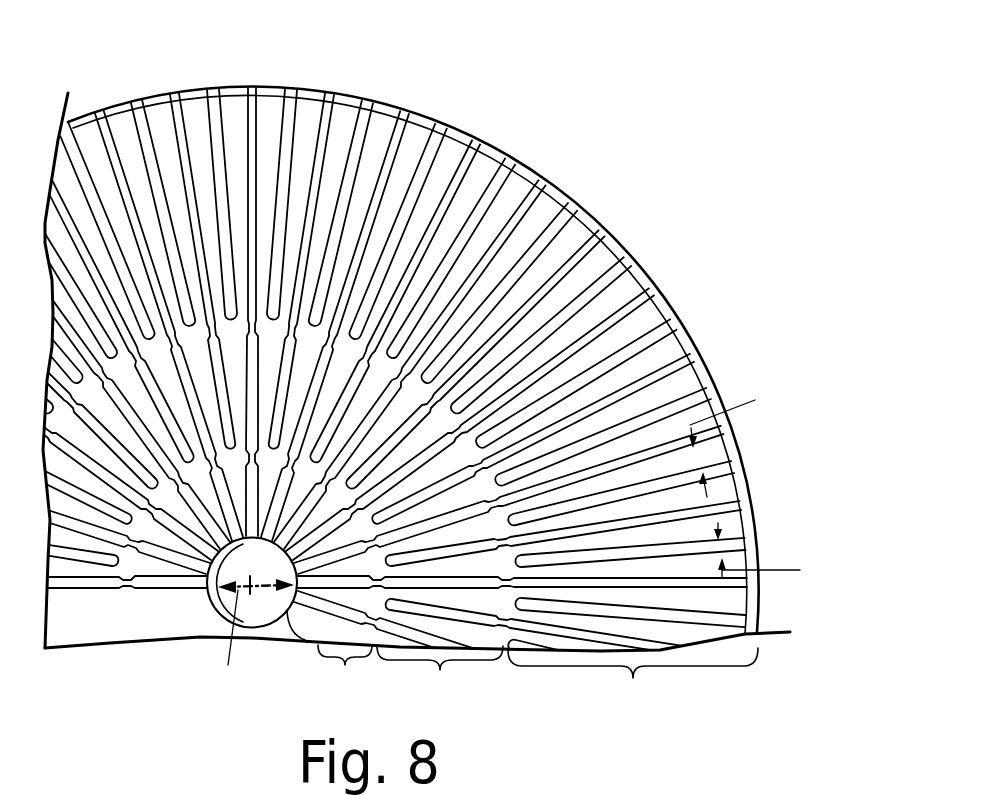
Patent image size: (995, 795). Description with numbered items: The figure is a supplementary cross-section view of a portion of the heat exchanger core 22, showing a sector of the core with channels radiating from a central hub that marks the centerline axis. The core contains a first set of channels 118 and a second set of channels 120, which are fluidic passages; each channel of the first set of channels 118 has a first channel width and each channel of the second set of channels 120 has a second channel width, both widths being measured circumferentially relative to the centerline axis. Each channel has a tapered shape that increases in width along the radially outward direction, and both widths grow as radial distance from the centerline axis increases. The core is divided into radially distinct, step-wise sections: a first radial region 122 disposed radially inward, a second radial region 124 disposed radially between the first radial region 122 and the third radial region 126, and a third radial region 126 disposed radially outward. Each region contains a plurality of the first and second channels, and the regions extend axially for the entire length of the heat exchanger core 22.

The heat exchanger core 22 is at (606, 92).
The first set of channels 118 is at (587, 212).
The second set of channels 120 is at (636, 263).
The first radial region 122 is at (327, 665).
The second radial region 124 is at (440, 675).
The third radial region 126 is at (633, 682).